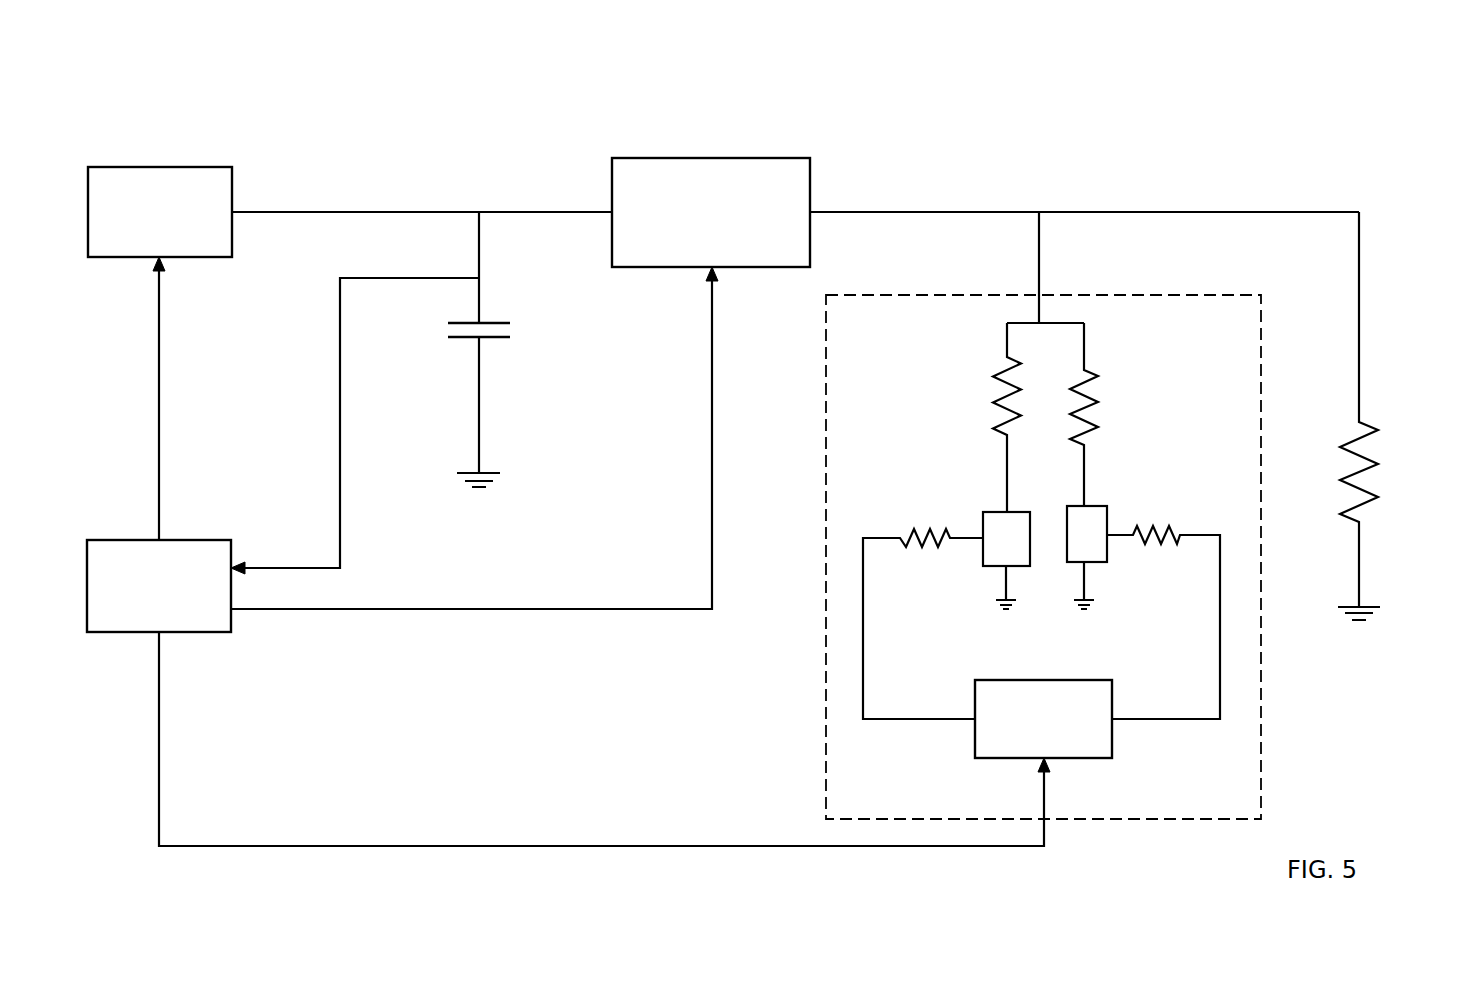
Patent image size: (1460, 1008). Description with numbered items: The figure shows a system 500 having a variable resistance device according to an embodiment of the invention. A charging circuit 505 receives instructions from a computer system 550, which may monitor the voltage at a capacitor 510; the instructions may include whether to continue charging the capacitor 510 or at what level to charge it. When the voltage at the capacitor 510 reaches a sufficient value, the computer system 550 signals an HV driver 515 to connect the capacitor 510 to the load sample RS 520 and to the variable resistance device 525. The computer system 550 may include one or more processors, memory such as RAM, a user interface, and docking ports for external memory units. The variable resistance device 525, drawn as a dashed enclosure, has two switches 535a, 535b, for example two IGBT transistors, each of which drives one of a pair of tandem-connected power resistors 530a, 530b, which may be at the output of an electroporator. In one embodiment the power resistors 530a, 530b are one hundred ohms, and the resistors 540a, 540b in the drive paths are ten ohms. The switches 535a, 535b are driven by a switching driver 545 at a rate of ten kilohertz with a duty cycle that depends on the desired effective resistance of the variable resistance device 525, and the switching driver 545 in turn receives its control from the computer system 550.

The system 500 is at (1204, 107).
The charging circuit 505 is at (177, 167).
The capacitor 510 is at (507, 337).
The HV driver 515 is at (698, 158).
The load sample RS 520 is at (1380, 445).
The variable resistance device 525 is at (825, 683).
The power resistor 530a is at (978, 397).
The power resistor 530b is at (1108, 408).
The switch 535a is at (983, 520).
The switch 535b is at (1107, 520).
The resistor 540a is at (915, 555).
The resistor 540b is at (1162, 545).
The switching driver 545 is at (1083, 758).
The computer system 550 is at (172, 540).